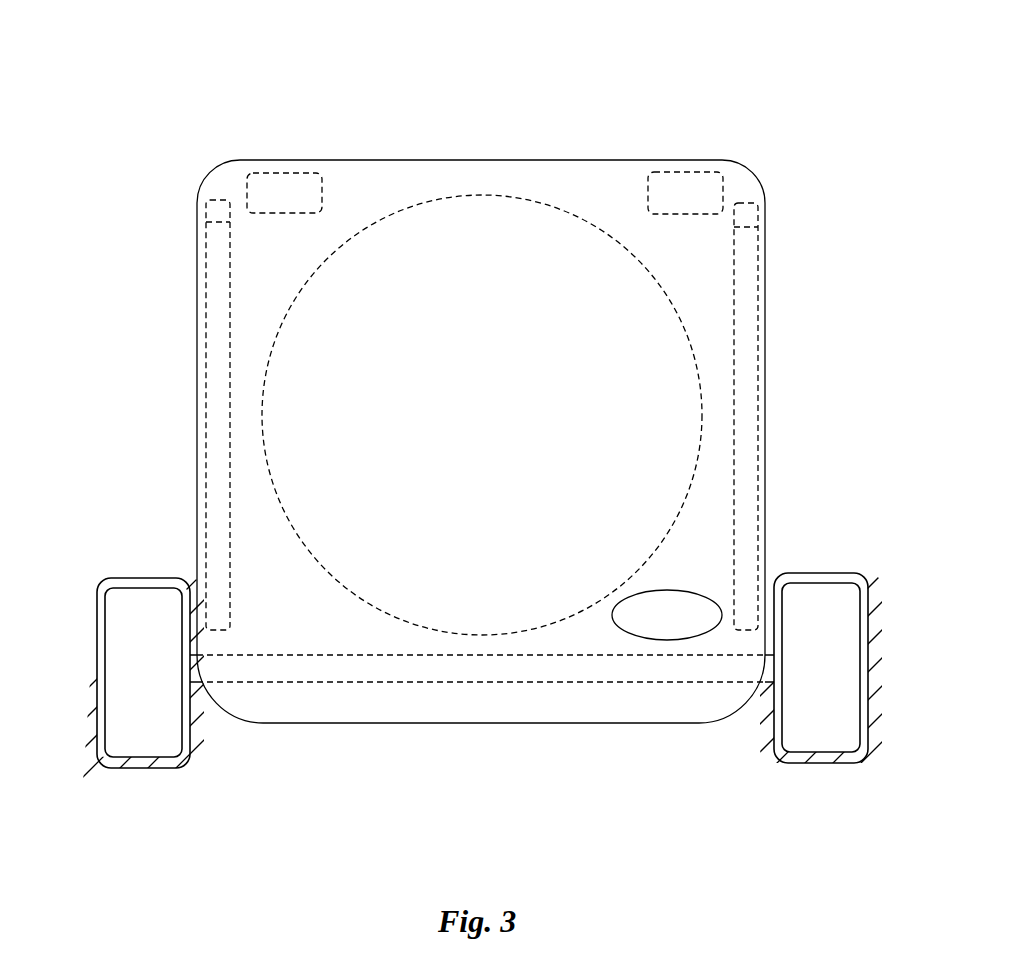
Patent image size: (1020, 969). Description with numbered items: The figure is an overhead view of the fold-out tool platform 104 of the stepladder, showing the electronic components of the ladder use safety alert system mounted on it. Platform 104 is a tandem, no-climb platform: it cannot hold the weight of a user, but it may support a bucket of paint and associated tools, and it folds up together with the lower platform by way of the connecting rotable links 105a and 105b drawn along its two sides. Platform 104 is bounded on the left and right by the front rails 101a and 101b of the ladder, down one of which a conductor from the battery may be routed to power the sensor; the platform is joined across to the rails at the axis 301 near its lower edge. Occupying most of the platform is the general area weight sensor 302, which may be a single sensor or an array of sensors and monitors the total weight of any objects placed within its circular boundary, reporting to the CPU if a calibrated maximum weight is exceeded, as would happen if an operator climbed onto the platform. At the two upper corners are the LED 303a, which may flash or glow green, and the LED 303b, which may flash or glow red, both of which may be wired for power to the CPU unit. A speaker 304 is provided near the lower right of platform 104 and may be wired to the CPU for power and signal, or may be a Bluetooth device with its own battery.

The platform 104 is at (319, 72).
The weight sensor 302 is at (308, 282).
The LED 303a is at (688, 172).
The LED 303b is at (288, 173).
The rotable link 105a is at (735, 425).
The rotable link 105b is at (232, 528).
The speaker 304 is at (668, 590).
The axle 301 is at (542, 655).
The front rail 101a is at (823, 763).
The front rail 101b is at (150, 768).